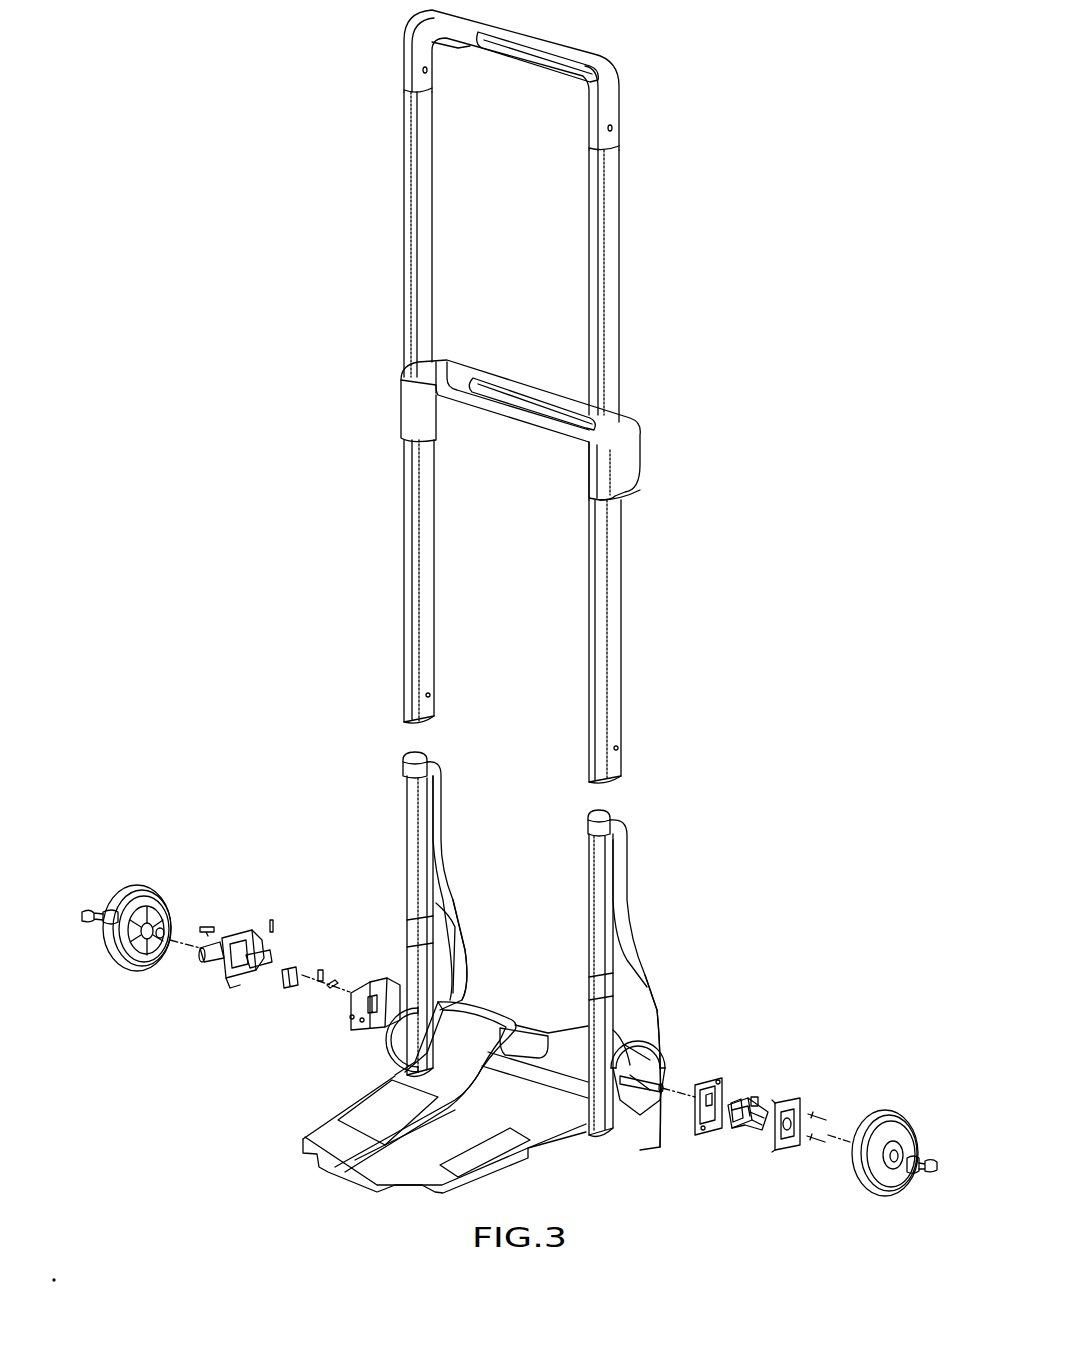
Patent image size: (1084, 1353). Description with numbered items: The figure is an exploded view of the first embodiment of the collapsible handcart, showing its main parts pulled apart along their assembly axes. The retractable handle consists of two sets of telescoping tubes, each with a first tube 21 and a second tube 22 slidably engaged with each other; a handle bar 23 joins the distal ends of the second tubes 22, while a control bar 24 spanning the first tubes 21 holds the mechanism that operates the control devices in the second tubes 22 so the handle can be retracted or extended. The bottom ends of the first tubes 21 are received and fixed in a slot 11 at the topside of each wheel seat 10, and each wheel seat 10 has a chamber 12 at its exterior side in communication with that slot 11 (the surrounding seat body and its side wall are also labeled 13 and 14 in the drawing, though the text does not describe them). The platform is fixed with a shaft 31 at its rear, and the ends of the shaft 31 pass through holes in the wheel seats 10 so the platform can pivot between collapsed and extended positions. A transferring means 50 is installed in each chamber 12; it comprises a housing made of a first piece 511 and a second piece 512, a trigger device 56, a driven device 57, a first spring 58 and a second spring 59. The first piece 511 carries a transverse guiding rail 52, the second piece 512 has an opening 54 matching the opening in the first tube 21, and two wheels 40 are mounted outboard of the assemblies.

The wheel seat 10 is at (460, 960).
The slot 11 is at (425, 905).
The chamber 12 is at (647, 1087).
The wheel housing 13 is at (650, 1057).
The side bracket 14 is at (467, 965).
The first tube 21 is at (430, 612).
The second tube 22 is at (430, 242).
The handle bar 23 is at (580, 42).
The control bar 24 is at (468, 390).
The shaft 31 is at (650, 1095).
The wheel 40 is at (113, 965).
The transferring means 50 is at (274, 915).
The transverse guiding rail 52 is at (225, 962).
The opening 54 is at (355, 1028).
The trigger device 56 is at (235, 972).
The driven device 57 is at (287, 990).
The first spring 58 is at (333, 978).
The second spring 59 is at (315, 968).
The first piece 511 is at (787, 1150).
The second piece 512 is at (350, 1027).